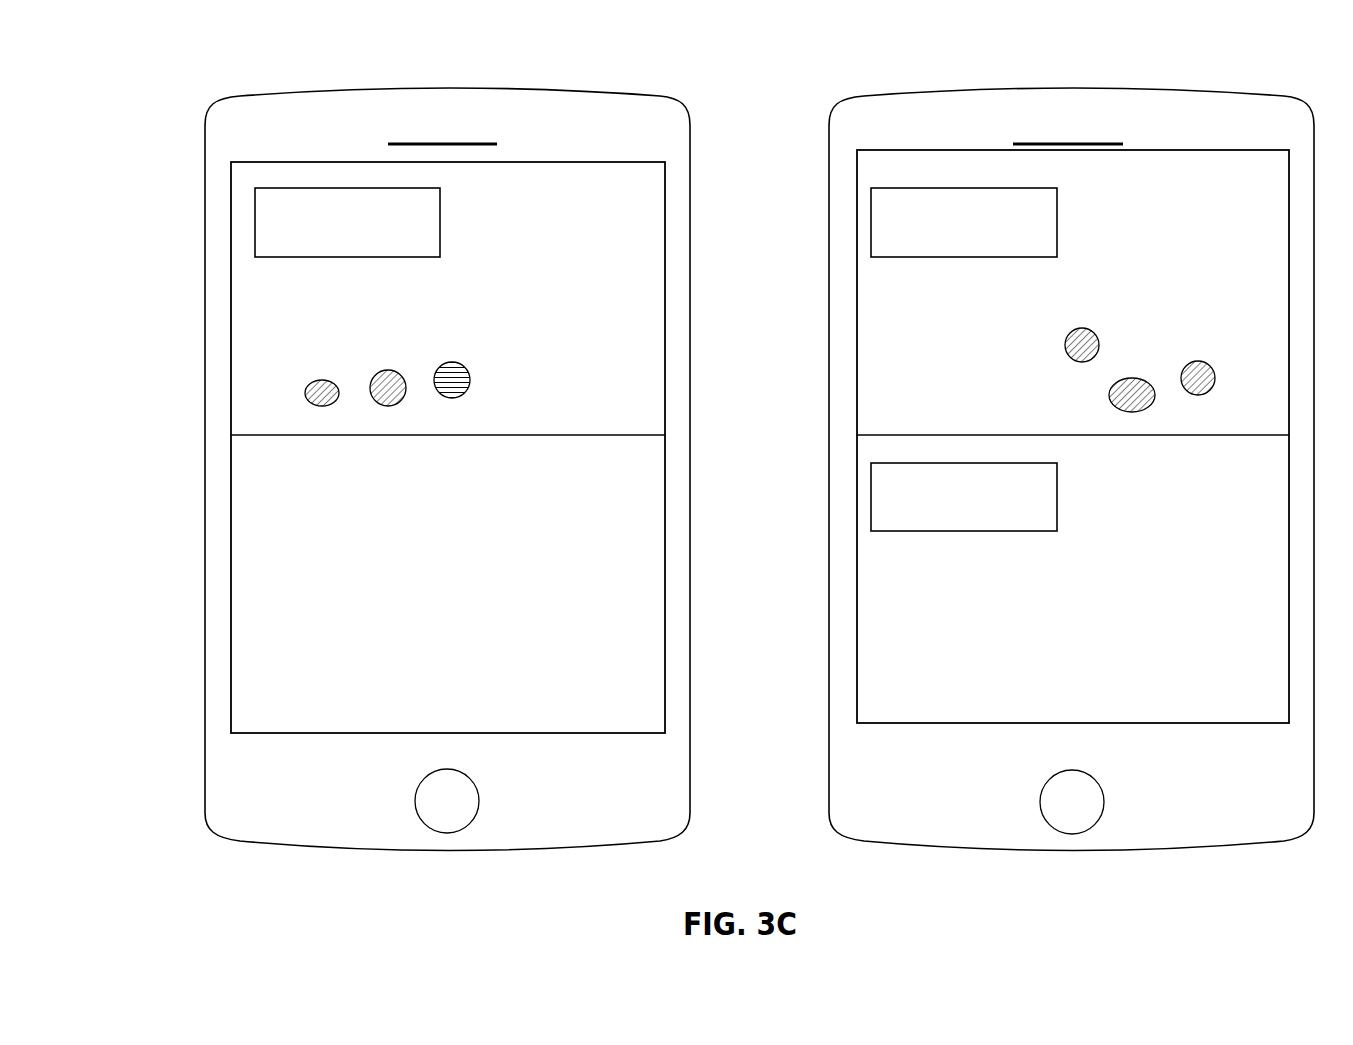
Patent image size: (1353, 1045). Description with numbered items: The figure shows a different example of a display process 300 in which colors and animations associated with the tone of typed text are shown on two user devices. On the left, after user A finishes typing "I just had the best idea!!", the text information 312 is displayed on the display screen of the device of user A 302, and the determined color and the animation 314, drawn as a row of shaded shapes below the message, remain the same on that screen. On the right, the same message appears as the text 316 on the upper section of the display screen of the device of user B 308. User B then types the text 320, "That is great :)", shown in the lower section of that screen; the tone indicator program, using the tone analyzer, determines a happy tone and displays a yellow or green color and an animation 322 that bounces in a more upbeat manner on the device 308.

The display process 300 is at (253, 78).
The device of user A 302 is at (403, 86).
The device of user B 308 is at (1038, 86).
The text information 312 is at (440, 229).
The animation 314 is at (458, 365).
The text 316 is at (1057, 237).
The text 320 is at (1057, 487).
The animation 322 is at (1098, 332).